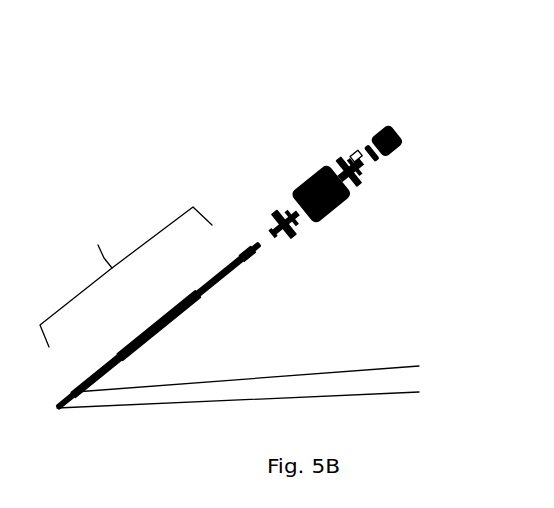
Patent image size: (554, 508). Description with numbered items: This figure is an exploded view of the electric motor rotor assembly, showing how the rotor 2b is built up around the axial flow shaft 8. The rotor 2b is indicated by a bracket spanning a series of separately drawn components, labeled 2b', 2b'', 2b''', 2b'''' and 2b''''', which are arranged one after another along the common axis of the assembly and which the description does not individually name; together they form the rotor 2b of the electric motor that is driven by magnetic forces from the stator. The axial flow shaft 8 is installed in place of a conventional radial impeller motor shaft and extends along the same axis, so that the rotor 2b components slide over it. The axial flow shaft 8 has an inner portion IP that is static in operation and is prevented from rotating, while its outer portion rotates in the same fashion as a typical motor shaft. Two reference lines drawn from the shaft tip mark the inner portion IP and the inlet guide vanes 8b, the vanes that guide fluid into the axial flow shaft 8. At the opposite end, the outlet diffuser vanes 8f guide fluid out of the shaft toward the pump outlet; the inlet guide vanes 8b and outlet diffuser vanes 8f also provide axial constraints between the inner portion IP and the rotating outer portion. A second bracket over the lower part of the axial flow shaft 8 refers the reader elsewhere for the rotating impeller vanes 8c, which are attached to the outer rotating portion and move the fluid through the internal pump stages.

The rotor 2b is at (341, 149).
The end cap 2b' is at (406, 158).
The washer 2b'' is at (405, 178).
The threaded connector 2b''' is at (389, 189).
The cylindrical body 2b'''' is at (371, 208).
The cross pin 2b''''' is at (358, 235).
The axial flow shaft 8 is at (244, 326).
The inlet guide vanes 8b is at (257, 376).
The rotating impeller vanes 8c is at (112, 266).
The outlet diffuser vanes 8f is at (247, 263).
The inner portion IP is at (245, 394).